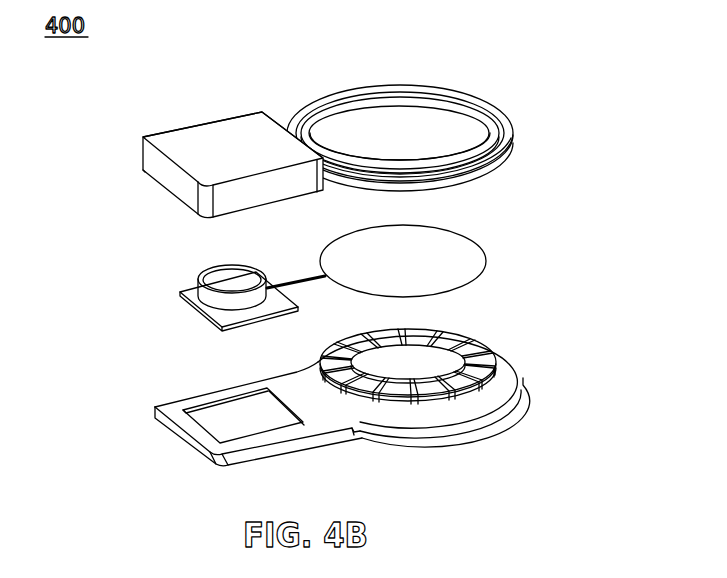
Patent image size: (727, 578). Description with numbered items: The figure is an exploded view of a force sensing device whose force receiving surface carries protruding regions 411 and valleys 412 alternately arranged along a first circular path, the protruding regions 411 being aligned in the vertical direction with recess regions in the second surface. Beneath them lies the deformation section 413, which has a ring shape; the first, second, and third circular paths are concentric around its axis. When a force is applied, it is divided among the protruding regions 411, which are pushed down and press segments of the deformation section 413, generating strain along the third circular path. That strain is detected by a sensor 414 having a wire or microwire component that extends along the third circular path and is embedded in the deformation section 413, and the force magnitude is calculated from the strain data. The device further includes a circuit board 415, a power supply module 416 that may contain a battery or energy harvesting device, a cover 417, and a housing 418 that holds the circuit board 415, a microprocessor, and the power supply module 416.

The protruding regions 411 is at (445, 337).
The valleys 412 is at (402, 398).
The deformation section 413 is at (507, 370).
The sensor 414 is at (485, 250).
The circuit board 415 is at (277, 302).
The power supply module 416 is at (218, 283).
The cover 417 is at (487, 115).
The housing 418 is at (180, 140).